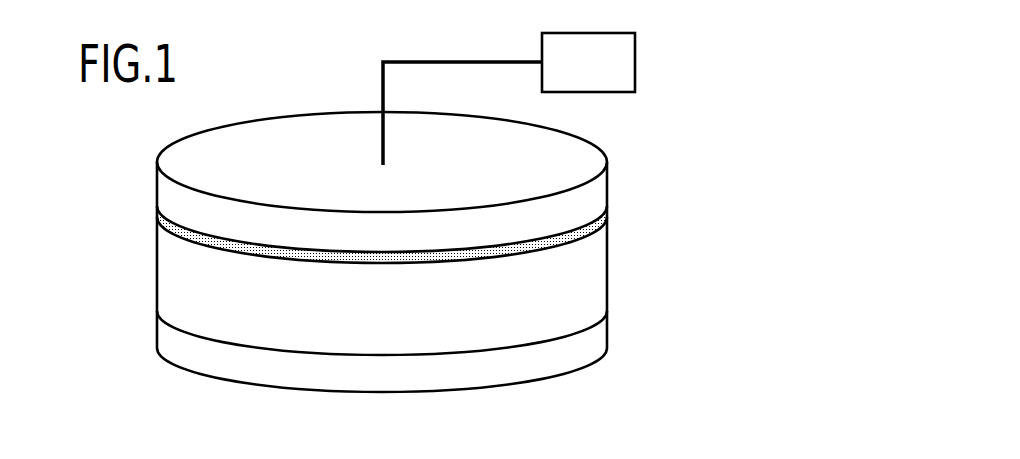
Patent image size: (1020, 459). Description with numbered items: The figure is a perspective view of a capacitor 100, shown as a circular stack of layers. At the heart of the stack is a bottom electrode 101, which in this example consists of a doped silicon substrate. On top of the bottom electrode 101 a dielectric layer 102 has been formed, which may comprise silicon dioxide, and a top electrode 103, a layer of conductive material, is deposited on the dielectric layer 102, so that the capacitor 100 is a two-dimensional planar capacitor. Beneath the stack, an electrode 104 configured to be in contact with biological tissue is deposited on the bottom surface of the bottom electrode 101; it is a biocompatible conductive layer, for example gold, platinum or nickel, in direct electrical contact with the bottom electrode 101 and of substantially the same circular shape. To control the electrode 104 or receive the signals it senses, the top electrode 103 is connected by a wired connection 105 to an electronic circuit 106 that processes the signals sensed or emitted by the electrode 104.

The capacitor 100 is at (130, 163).
The bottom electrode 101 is at (597, 294).
The dielectric layer 102 is at (597, 221).
The top electrode 103 is at (597, 193).
The electrode 104 is at (597, 342).
The wired connection 105 is at (450, 60).
The electronic circuit 106 is at (613, 75).